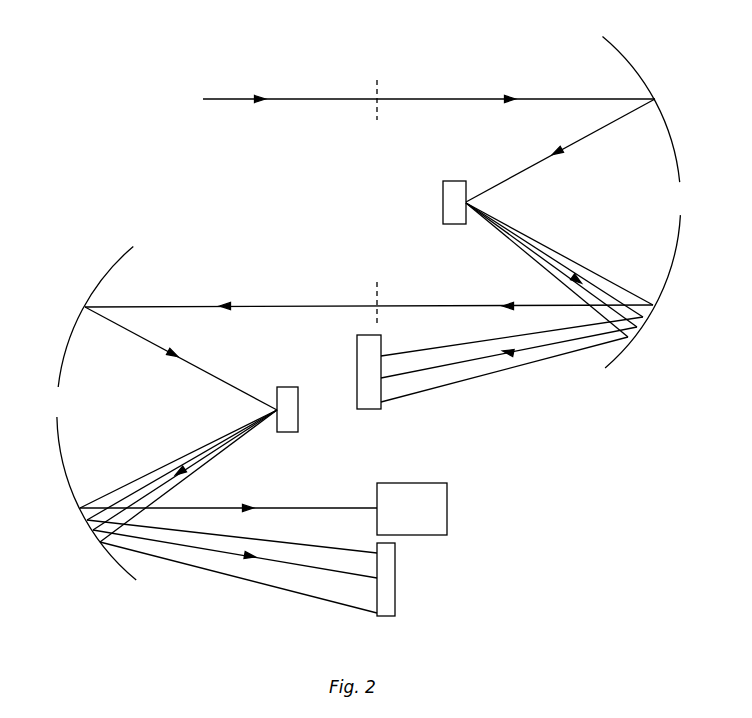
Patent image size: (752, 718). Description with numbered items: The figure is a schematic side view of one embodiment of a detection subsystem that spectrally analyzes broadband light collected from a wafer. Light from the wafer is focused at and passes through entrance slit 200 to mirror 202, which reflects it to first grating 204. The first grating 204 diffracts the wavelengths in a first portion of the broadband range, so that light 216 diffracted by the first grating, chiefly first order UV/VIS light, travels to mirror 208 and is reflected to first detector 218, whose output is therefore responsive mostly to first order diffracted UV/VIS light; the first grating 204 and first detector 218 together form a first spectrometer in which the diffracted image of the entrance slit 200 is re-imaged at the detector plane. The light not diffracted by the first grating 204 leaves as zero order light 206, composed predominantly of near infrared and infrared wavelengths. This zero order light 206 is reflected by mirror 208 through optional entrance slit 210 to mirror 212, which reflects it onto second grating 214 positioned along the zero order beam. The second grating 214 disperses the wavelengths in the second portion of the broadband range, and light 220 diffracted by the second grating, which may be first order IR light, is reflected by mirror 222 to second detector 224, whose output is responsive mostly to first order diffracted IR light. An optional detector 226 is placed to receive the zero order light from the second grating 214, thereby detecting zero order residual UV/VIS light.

The entrance slit 200 is at (377, 82).
The mirror 202 is at (628, 62).
The first grating 204 is at (443, 186).
The zero order light 206 is at (427, 305).
The mirror 208 is at (672, 275).
The optional entrance slit 210 is at (378, 288).
The mirror 212 is at (72, 330).
The second grating 214 is at (300, 410).
The light diffracted by the first grating 216 is at (478, 377).
The first detector 218 is at (357, 357).
The light diffracted by the second grating 220 is at (198, 467).
The mirror 222 is at (63, 468).
The second detector 224 is at (397, 591).
The optional detector 226 is at (448, 503).